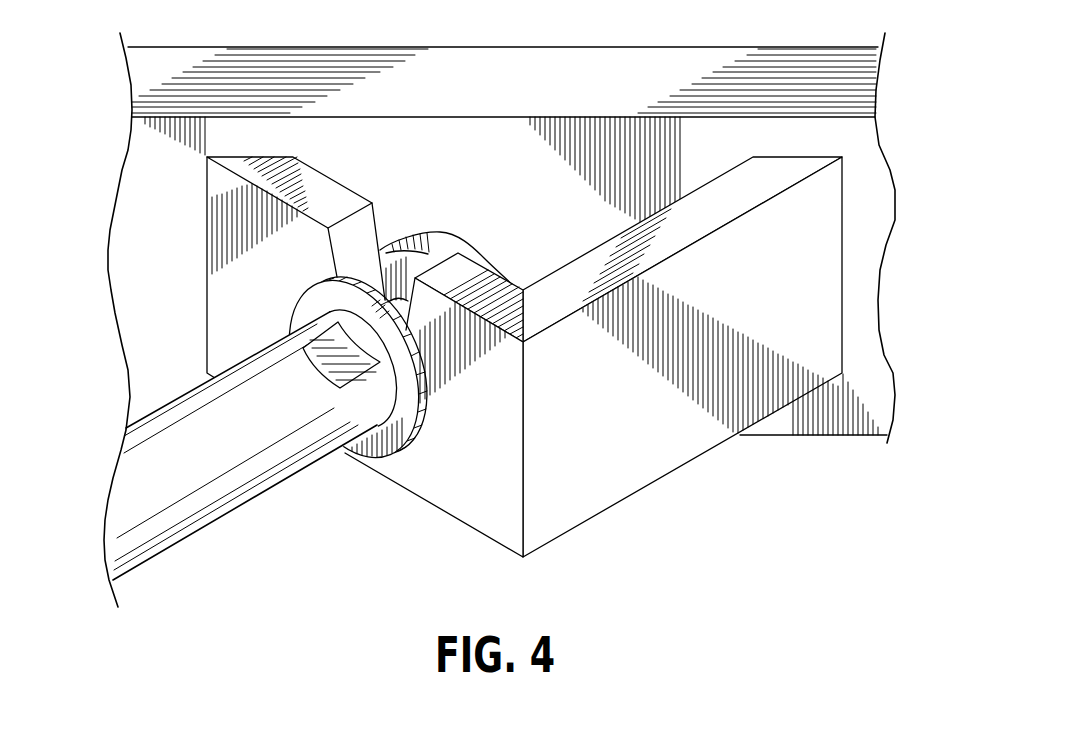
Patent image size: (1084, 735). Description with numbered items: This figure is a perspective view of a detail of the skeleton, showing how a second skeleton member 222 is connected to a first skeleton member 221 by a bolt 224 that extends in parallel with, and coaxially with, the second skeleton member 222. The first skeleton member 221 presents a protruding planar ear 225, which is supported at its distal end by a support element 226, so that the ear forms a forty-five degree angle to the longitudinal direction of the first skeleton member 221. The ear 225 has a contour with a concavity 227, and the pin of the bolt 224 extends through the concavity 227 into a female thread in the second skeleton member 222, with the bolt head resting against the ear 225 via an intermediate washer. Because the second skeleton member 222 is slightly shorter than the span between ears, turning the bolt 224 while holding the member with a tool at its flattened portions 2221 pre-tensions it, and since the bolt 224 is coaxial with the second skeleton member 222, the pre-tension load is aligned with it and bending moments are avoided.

The first skeleton member 221 is at (603, 60).
The second skeleton member 222 is at (235, 455).
The flattened portion 2221 is at (338, 314).
The bolt 224 is at (463, 248).
The ear 225 is at (457, 482).
The support element 226 is at (648, 437).
The concavity 227 is at (365, 232).